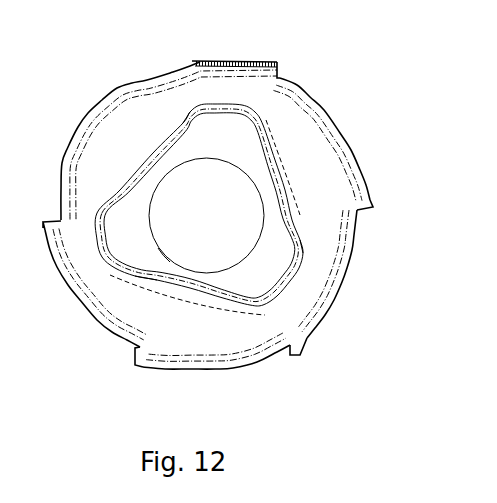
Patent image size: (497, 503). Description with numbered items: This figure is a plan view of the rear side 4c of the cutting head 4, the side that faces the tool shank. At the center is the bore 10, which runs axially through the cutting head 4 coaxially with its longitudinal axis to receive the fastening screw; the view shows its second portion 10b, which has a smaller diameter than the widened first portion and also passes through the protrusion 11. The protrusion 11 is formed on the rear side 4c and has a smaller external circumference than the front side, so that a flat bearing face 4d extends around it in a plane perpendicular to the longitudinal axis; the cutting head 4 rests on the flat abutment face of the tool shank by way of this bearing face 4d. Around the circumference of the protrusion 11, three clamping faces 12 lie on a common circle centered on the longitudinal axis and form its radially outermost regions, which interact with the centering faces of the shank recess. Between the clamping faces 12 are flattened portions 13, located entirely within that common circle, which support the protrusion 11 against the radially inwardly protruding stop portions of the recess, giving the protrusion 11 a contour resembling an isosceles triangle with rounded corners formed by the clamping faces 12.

The cutting head 4 is at (66, 92).
The rear side 4c is at (153, 107).
The bearing face 4d is at (280, 113).
The bore 10 is at (225, 210).
The second portion 10b is at (160, 253).
The protrusion 11 is at (129, 247).
The clamping faces 12 is at (222, 112).
The flattened portions 13 is at (192, 125).